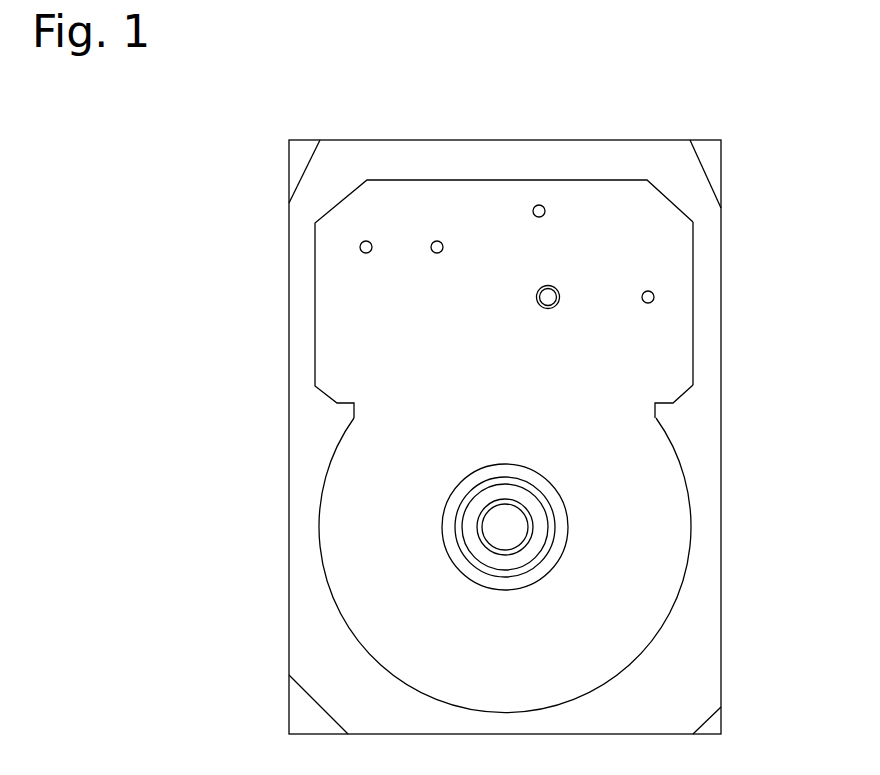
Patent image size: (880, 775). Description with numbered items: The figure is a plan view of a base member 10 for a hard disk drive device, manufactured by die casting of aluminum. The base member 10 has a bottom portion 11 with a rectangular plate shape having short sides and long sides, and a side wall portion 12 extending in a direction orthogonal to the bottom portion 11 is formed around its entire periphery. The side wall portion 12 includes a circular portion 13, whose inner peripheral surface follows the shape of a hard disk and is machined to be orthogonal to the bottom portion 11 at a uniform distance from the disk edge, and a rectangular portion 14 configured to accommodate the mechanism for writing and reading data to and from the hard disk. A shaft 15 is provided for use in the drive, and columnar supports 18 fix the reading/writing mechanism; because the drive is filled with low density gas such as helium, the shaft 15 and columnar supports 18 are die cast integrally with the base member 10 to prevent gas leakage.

The base member 10 is at (738, 190).
The bottom portion 11 is at (489, 198).
The side wall portion 12 is at (685, 640).
The circular portion 13 is at (686, 575).
The rectangular portion 14 is at (692, 356).
The shaft 15 is at (548, 309).
The columnar support 18 is at (370, 253).